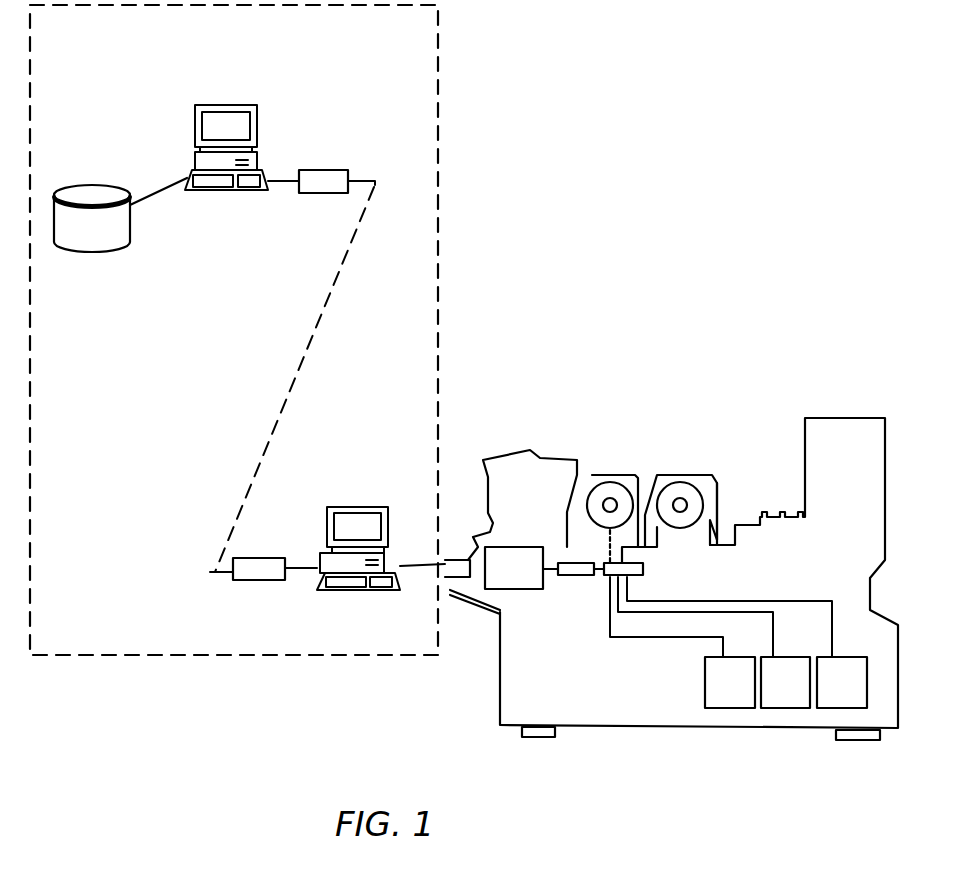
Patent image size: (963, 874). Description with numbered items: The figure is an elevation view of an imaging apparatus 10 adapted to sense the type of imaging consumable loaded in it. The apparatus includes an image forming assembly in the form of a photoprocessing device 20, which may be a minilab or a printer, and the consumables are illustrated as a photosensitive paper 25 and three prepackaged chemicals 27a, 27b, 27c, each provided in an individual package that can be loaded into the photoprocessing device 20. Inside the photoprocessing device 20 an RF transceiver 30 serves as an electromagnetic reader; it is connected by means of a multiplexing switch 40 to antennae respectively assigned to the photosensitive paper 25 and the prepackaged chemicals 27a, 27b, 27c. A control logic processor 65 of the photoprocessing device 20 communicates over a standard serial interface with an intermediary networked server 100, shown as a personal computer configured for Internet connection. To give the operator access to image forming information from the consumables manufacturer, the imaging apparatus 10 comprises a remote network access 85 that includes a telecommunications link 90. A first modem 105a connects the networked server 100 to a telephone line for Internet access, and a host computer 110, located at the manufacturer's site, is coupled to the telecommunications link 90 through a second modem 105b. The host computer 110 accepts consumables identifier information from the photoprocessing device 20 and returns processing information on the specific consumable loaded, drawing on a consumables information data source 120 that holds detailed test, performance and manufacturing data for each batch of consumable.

The imaging apparatus 10 is at (676, 125).
The photoprocessing device 20 is at (805, 460).
The photosensitive paper 25 is at (603, 480).
The prepackaged chemical 27a is at (727, 697).
The prepackaged chemical 27b is at (786, 697).
The prepackaged chemical 27c is at (850, 697).
The RF transceiver 30 is at (578, 577).
The multiplexing switch 40 is at (643, 569).
The control logic processor 65 is at (515, 547).
The remote network access 85 is at (455, 92).
The telecommunications link 90 is at (345, 291).
The networked server 100 is at (365, 507).
The first modem 105a is at (260, 580).
The second modem 105b is at (323, 170).
The host computer 110 is at (230, 105).
The consumables information data source 120 is at (96, 187).